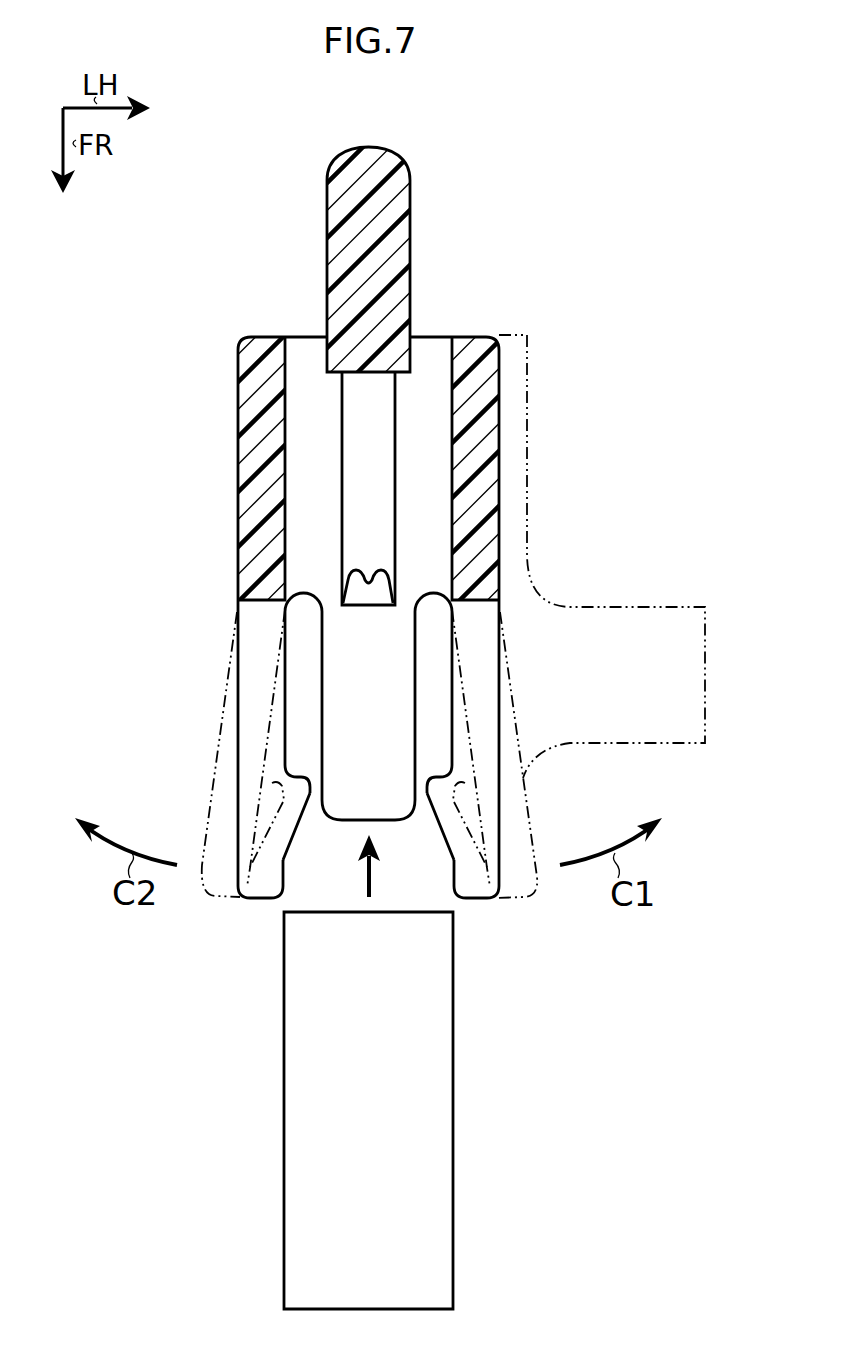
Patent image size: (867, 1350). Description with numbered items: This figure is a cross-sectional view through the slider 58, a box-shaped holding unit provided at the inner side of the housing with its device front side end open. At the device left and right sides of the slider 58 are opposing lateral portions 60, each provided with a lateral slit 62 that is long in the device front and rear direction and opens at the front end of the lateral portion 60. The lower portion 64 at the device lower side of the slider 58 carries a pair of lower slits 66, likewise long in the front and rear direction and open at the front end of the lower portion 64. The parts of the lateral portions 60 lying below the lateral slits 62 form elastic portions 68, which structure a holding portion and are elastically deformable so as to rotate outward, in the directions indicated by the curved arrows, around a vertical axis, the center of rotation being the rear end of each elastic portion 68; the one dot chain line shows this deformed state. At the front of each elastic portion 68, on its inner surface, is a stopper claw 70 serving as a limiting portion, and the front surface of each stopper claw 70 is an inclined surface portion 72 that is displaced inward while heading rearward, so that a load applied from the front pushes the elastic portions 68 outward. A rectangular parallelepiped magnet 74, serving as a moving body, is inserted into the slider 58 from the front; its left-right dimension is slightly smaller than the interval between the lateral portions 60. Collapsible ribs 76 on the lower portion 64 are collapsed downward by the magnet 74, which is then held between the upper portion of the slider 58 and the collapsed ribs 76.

The slider 58 is at (574, 213).
The lateral portion 60 is at (237, 471).
The lateral slit 62 is at (248, 620).
The lower portion 64 is at (350, 806).
The lower slit 66 is at (238, 672).
The elastic portion 68 is at (212, 773).
The stopper claw 70 is at (312, 792).
The inclined surface portion 72 is at (297, 838).
The magnet 74 is at (453, 1058).
The collapsible rib 76 is at (372, 607).